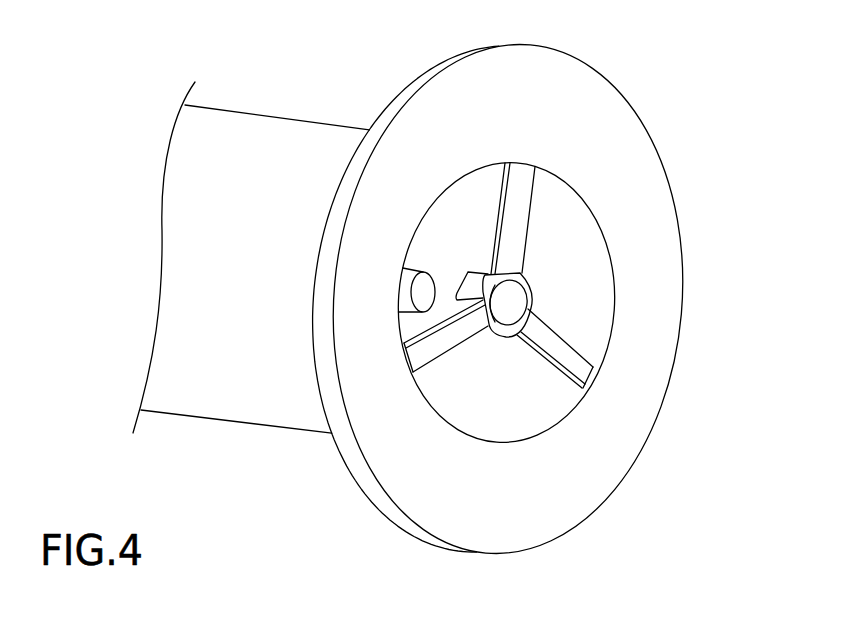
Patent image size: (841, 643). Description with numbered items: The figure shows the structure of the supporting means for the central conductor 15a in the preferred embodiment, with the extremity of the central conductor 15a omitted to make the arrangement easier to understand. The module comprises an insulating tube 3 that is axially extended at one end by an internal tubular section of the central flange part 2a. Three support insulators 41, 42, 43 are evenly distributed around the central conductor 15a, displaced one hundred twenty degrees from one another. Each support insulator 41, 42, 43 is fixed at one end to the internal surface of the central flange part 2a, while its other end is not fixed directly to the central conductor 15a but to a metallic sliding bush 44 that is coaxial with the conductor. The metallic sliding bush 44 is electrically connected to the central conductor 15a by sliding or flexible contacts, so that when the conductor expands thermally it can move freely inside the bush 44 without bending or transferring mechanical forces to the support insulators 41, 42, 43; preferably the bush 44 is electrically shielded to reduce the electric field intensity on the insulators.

The central flange part 2a is at (437, 512).
The insulating tube 3 is at (277, 130).
The central conductor 15a is at (428, 282).
The support insulator 41 is at (523, 207).
The support insulator 42 is at (578, 372).
The support insulator 43 is at (438, 345).
The metallic sliding bush 44 is at (527, 283).